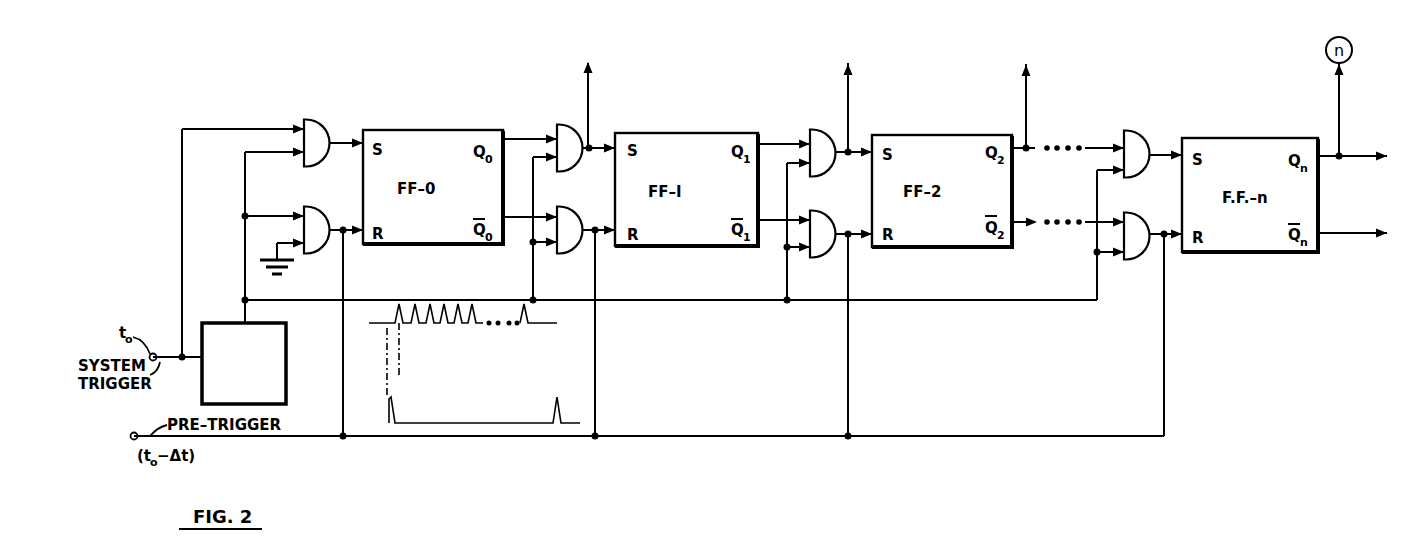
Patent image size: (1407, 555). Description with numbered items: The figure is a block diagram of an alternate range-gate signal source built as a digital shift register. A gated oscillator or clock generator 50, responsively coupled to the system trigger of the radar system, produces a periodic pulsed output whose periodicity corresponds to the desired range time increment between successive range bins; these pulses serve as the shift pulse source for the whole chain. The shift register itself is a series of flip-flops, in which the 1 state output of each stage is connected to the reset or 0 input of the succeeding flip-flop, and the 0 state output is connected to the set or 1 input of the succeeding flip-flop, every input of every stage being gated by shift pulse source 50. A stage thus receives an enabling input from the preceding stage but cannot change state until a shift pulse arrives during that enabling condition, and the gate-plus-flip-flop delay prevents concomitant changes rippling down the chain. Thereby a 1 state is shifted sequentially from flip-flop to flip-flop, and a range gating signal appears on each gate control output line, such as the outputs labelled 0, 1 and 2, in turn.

The clock generator 50 is at (288, 338).
The reset input 0 is at (588, 91).
The set input 1 is at (847, 94).
The output terminal 2 is at (1026, 93).